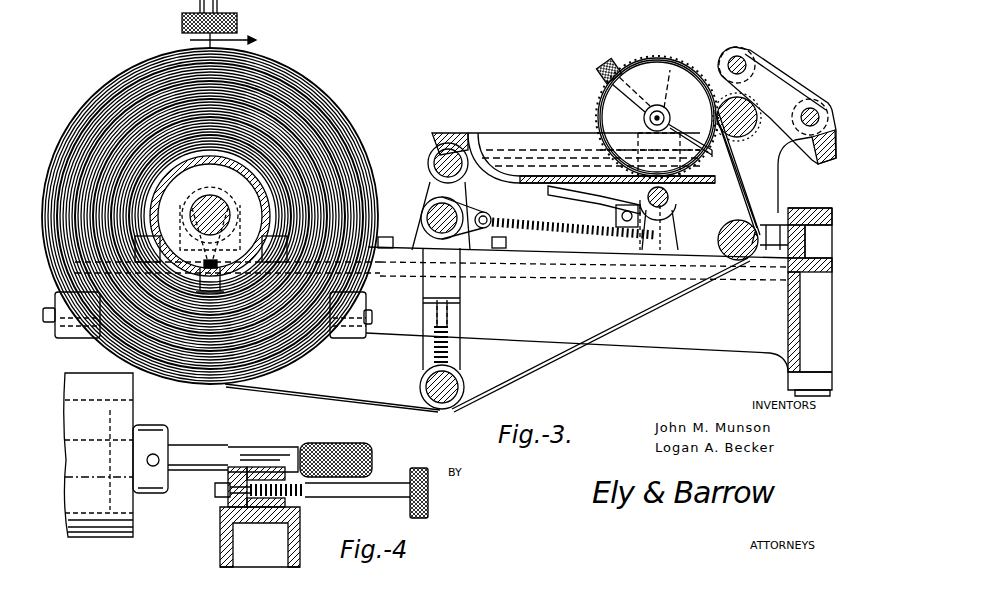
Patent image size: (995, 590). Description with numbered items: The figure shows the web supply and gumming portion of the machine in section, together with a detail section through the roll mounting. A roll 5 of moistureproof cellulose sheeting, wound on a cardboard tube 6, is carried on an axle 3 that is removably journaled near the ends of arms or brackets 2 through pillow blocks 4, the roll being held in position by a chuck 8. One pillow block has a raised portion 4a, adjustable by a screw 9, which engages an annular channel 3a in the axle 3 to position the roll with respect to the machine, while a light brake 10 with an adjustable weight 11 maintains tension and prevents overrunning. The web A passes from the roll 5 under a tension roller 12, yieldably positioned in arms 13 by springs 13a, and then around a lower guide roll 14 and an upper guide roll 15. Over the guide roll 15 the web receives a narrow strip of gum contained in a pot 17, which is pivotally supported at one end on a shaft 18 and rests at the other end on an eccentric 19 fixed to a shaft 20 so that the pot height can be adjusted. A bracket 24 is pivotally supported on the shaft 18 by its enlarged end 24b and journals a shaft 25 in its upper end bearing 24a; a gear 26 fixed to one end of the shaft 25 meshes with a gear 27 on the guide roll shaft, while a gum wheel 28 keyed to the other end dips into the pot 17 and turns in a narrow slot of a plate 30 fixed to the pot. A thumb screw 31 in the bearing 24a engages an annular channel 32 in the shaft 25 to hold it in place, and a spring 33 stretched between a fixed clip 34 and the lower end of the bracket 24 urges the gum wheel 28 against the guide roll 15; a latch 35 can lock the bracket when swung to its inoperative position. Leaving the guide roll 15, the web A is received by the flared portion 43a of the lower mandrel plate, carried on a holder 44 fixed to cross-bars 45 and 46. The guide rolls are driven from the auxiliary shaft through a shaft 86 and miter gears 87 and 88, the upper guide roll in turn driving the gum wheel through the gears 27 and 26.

In FIG. 3, the arms or brackets 2 is at (705, 342).
In FIG. 4, the arms or brackets 2 is at (298, 545).
In FIG. 3, the axle 3 is at (212, 196).
In FIG. 4, the axle 3 is at (190, 452).
In FIG. 4, the annular channel 3a is at (238, 446).
In FIG. 3, the pillow blocks 4 is at (219, 117).
In FIG. 4, the pillow blocks 4 is at (272, 523).
In FIG. 4, the raised portion 4a is at (226, 482).
In FIG. 3, the roll 5 is at (318, 104).
In FIG. 4, the roll 5 is at (90, 390).
In FIG. 3, the cardboard tube 6 is at (200, 162).
In FIG. 4, the chuck 8 is at (140, 425).
In FIG. 4, the screw 9 is at (418, 468).
In FIG. 3, the brake 10 is at (190, 203).
In FIG. 3, the adjustable weight 11 is at (70, 338).
In FIG. 3, the tension roller 12 is at (462, 383).
In FIG. 3, the arms 13 is at (462, 326).
In FIG. 3, the springs 13a is at (452, 350).
In FIG. 3, the lower guide roll 14 is at (718, 238).
In FIG. 3, the upper guide roll 15 is at (755, 130).
In FIG. 3, the pot 17 is at (500, 136).
In FIG. 3, the shaft 18 is at (676, 206).
In FIG. 3, the eccentric 19 is at (430, 164).
In FIG. 3, the shaft 20 is at (440, 172).
In FIG. 3, the bracket 24 is at (690, 129).
In FIG. 3, the upper end bearing 24a is at (645, 88).
In FIG. 3, the enlarged end 24b is at (672, 198).
In FIG. 3, the shaft 25 is at (649, 118).
In FIG. 3, the gear 26 is at (598, 112).
In FIG. 3, the gear 27 is at (738, 138).
In FIG. 3, the gum wheel 28 is at (643, 62).
In FIG. 3, the plate 30 is at (702, 149).
In FIG. 3, the thumb screw 31 is at (602, 72).
In FIG. 3, the annular channel 32 is at (668, 108).
In FIG. 3, the spring 33 is at (556, 232).
In FIG. 3, the fixed clip 34 is at (470, 214).
In FIG. 3, the latch 35 is at (604, 218).
In FIG. 3, the flared portion of lower plate 43a is at (812, 148).
In FIG. 3, the holder 44 is at (778, 86).
In FIG. 3, the cross-bar 45 is at (742, 60).
In FIG. 3, the cross-bar 46 is at (814, 110).
In FIG. 3, the shaft 86 is at (812, 212).
In FIG. 3, the miter gear 87 is at (754, 244).
In FIG. 3, the miter gear 88 is at (748, 178).
In FIG. 3, the web A is at (340, 400).